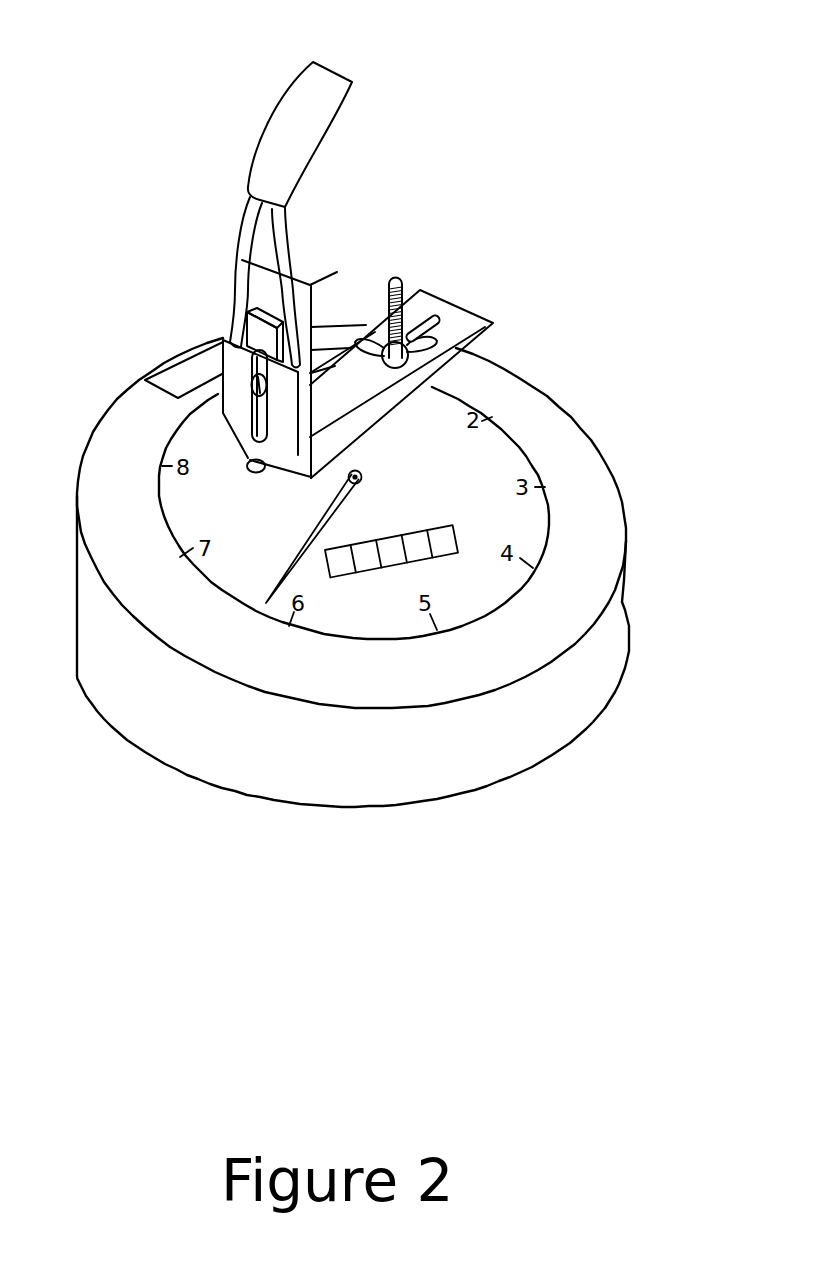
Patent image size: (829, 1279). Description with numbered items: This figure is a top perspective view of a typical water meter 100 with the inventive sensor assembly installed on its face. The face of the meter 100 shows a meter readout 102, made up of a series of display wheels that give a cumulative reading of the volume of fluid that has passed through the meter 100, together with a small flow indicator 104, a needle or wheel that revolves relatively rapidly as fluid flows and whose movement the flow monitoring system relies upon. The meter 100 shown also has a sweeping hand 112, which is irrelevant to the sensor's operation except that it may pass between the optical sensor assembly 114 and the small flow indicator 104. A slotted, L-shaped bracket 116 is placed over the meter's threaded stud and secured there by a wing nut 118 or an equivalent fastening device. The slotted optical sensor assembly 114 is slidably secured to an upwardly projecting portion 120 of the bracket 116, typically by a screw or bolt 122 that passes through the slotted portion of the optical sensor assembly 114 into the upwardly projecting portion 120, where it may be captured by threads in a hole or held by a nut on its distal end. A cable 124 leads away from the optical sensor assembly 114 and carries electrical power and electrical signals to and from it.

The water meter 100 is at (607, 500).
The meter readout 102 is at (453, 523).
The small flow indicator 104 is at (247, 466).
The sweeping hand 112 is at (330, 508).
The optical sensor assembly 114 is at (205, 419).
The L-shaped bracket 116 is at (473, 323).
The wing nut 118 is at (440, 334).
The upwardly projecting portion 120 is at (307, 293).
The screw or bolt 122 is at (255, 377).
The cable 124 is at (328, 80).